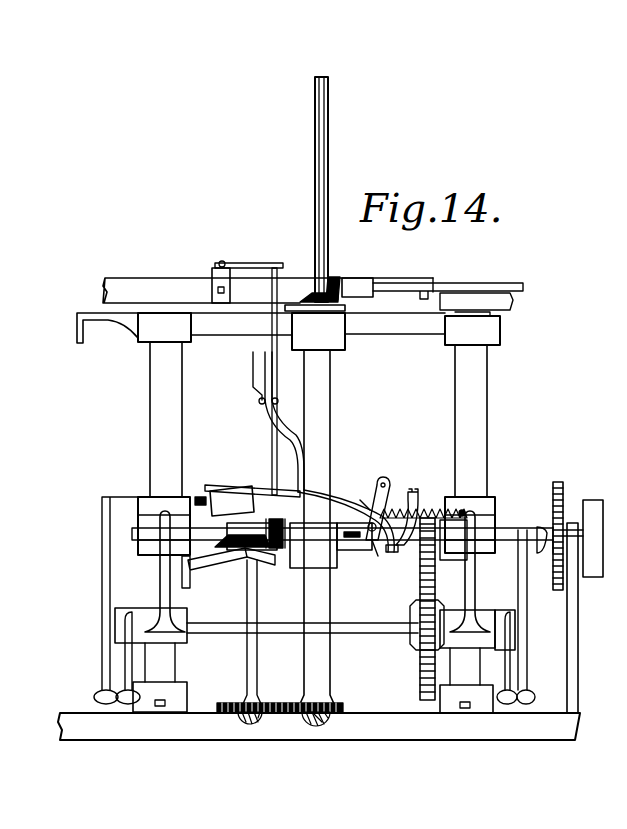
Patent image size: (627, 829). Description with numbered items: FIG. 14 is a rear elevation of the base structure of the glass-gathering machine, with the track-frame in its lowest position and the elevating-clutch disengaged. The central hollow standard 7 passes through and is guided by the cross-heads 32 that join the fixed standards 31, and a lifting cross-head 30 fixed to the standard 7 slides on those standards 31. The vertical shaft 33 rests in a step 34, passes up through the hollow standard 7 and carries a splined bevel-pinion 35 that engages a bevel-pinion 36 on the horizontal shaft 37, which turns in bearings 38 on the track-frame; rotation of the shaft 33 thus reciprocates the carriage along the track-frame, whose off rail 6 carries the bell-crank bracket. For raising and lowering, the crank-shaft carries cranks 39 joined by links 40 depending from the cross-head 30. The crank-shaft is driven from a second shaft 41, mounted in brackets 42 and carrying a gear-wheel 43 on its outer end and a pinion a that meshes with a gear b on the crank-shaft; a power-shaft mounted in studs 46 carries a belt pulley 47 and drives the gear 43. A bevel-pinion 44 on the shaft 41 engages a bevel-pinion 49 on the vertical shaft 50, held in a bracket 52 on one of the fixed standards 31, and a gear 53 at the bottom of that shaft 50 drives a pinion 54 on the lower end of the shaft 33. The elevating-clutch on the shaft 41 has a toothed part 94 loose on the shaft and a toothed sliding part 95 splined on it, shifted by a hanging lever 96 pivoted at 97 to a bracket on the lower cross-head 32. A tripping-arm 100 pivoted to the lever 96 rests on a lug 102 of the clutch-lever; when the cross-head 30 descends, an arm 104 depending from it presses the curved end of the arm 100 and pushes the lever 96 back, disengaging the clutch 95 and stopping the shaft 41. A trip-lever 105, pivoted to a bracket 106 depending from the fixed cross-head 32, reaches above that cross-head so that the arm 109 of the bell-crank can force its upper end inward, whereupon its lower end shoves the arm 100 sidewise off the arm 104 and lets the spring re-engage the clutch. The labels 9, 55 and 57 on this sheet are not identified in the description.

The off rail 6 is at (268, 290).
The standard 7 is at (317, 528).
The link 9 is at (366, 503).
The cross-head 30 is at (200, 497).
The fixed standards 31 is at (318, 419).
The cross-head 32 is at (130, 540).
The shaft 33 is at (315, 191).
The step 34 is at (323, 720).
The bevel-pinion 35 is at (314, 297).
The bevel-pinion 36 is at (335, 282).
The horizontal shaft 37 is at (462, 290).
The bearings 38 is at (365, 282).
The cranks 39 is at (125, 662).
The links 40 is at (103, 626).
The second shaft 41 is at (217, 530).
The brackets 42 is at (160, 580).
The gear-wheel 43 is at (555, 586).
The bevel-pinion 44 is at (331, 545).
The studs 46 is at (583, 618).
The pulley 47 is at (583, 529).
The bevel-pinion 49 is at (280, 550).
The vertical shaft 50 is at (250, 600).
The bracket 52 is at (214, 563).
The gear 53 is at (236, 703).
The pinion 54 is at (330, 705).
The base plate 55 is at (312, 722).
The bearing 57 is at (240, 716).
The clutch part 94 is at (420, 550).
The sliding clutch part 95 is at (373, 553).
The shifting-lever 96 is at (232, 501).
The pivot 97 is at (378, 499).
The tripping-arm 100 is at (252, 493).
The lug 102 is at (378, 558).
The arm 104 is at (414, 520).
The lever 105 is at (290, 432).
The bracket 106 is at (260, 372).
The arm 109 is at (272, 266).
The pinion a is at (453, 540).
The gear b is at (420, 676).